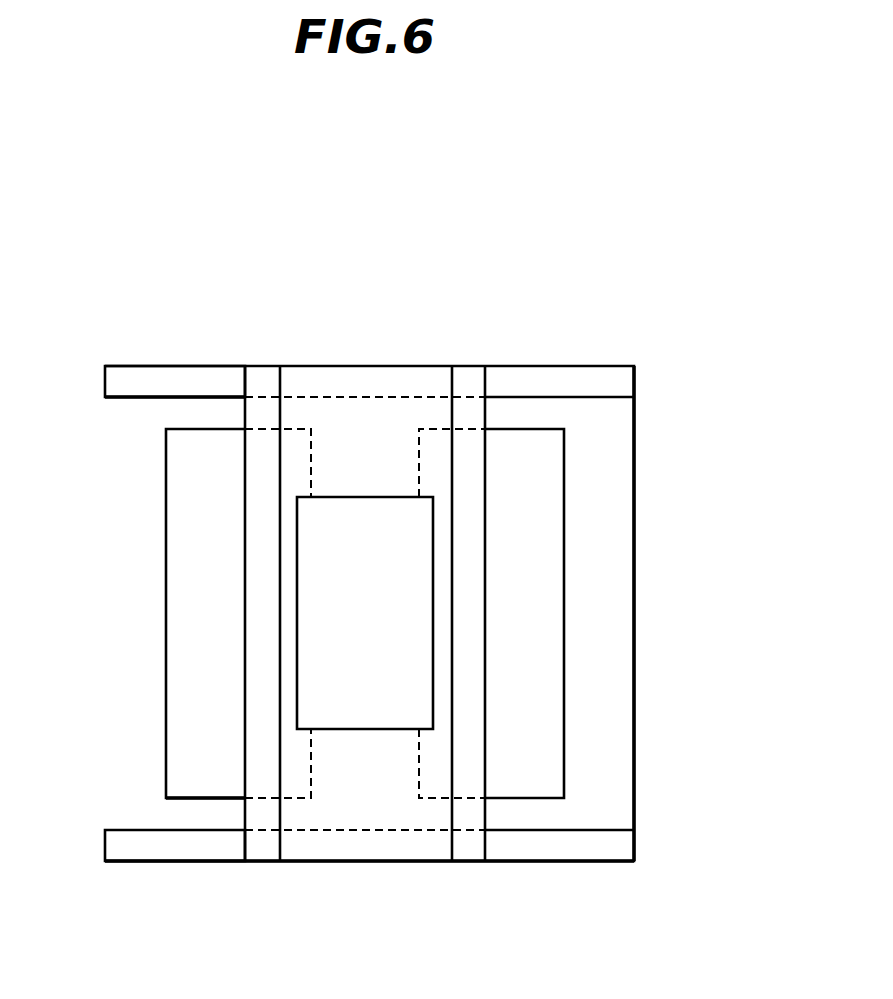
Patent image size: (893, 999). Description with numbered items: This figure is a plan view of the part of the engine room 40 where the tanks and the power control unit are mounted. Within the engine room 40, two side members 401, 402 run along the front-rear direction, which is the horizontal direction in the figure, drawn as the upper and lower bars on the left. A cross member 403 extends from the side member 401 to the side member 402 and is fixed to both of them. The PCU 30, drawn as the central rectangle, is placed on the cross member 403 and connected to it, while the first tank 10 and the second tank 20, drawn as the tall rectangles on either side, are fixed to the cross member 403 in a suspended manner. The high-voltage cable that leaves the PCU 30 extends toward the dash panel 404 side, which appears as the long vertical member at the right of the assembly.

The engine room 40 is at (696, 262).
The side member 401 is at (127, 378).
The side member 402 is at (141, 847).
The cross member 403 is at (360, 805).
The dash panel 404 is at (633, 608).
The first tank 10 is at (203, 450).
The second tank 20 is at (517, 458).
The PCU 30 is at (355, 530).